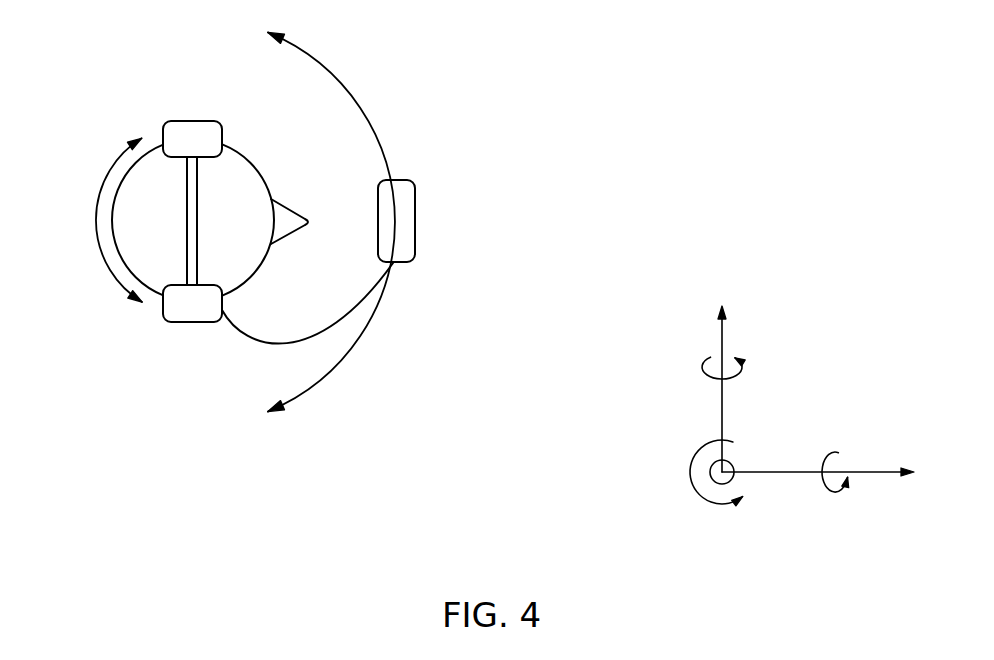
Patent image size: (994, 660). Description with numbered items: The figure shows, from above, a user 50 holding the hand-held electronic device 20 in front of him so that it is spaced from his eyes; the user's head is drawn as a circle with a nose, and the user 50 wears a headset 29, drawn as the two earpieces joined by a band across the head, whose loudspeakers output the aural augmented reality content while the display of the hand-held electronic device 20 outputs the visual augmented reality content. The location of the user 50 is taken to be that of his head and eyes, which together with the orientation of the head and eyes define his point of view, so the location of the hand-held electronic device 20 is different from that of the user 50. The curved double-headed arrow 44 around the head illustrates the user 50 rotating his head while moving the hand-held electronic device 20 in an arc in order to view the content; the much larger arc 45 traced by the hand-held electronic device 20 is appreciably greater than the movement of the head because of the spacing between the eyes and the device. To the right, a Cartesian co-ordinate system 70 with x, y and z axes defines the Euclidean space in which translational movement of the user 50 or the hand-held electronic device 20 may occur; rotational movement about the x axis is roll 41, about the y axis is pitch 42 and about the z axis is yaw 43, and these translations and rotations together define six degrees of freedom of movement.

The user 50 is at (248, 127).
The headset 29 is at (187, 322).
The hand-held electronic device 20 is at (417, 223).
The arrow illustrating head rotation 44 is at (117, 285).
The device movement direction around head 45 is at (313, 390).
The coordinate system 70 is at (822, 365).
The roll 41 is at (847, 482).
The pitch 42 is at (708, 373).
The yaw 43 is at (693, 462).